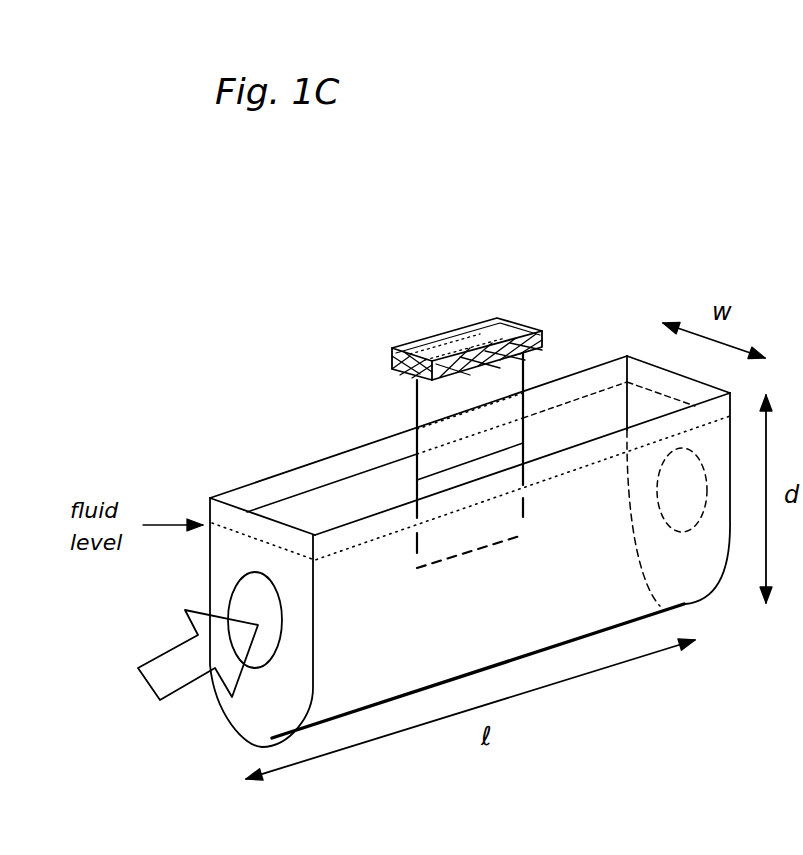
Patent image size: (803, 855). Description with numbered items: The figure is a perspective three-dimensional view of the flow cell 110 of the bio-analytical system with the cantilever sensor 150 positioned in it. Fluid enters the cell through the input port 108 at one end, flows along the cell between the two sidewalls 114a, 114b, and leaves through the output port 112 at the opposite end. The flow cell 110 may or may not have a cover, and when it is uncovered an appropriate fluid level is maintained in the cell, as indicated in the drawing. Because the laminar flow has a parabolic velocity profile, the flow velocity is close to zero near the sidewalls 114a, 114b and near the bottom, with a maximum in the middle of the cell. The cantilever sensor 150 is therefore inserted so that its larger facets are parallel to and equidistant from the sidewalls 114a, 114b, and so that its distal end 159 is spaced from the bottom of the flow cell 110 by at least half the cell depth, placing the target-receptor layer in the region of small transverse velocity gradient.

The input port 108 is at (247, 663).
The flow cell 110 is at (197, 450).
The output port 112 is at (683, 533).
The sidewall 114a is at (345, 454).
The sidewall 114b is at (552, 457).
The cantilever sensor 150 is at (475, 330).
The distal end 159 is at (460, 557).